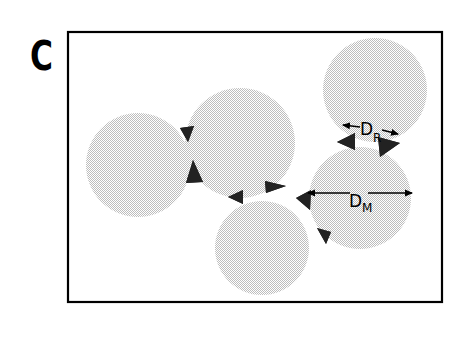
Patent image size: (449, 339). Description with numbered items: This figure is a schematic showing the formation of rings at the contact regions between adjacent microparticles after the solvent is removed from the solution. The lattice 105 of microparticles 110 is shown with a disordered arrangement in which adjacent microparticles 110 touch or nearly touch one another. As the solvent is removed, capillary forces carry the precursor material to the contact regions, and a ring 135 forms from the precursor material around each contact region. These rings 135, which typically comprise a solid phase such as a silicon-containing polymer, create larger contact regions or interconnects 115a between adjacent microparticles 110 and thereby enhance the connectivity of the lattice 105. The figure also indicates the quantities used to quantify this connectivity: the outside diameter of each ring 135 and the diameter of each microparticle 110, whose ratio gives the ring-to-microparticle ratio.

The lattice 105 is at (180, 78).
The microparticles 110 is at (343, 62).
The interconnects 115a is at (340, 137).
The ring 135 is at (340, 137).